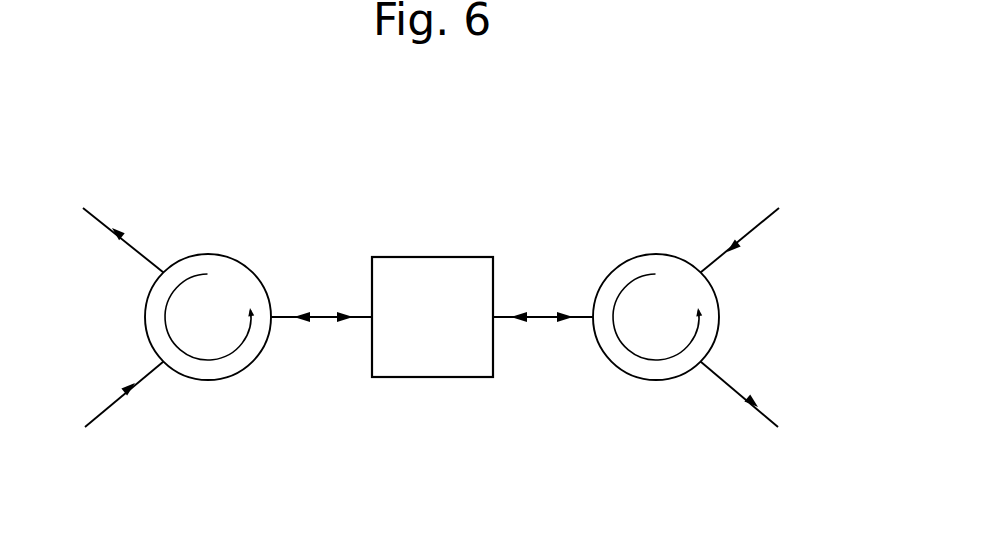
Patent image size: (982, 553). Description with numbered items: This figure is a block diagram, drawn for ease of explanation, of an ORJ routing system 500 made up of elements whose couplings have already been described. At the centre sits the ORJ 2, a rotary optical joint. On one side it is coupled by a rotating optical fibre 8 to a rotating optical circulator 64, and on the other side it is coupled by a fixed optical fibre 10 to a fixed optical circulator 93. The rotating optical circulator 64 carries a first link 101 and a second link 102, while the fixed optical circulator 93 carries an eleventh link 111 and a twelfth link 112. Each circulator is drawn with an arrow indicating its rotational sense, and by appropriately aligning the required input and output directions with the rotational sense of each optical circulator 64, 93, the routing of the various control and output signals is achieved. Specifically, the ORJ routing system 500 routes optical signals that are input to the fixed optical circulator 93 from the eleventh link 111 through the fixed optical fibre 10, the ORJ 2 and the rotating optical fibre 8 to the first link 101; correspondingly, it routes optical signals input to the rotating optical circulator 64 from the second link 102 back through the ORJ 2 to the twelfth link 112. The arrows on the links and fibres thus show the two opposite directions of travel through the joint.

The ORJ routing system 500 is at (660, 104).
The ORJ 2 is at (443, 335).
The rotating optical fibre 8 is at (320, 313).
The fixed optical fibre 10 is at (545, 310).
The rotating optical circulator 64 is at (228, 367).
The fixed optical circulator 93 is at (625, 363).
The first link 101 is at (103, 218).
The second link 102 is at (110, 408).
The eleventh link 111 is at (758, 220).
The twelfth link 112 is at (763, 415).